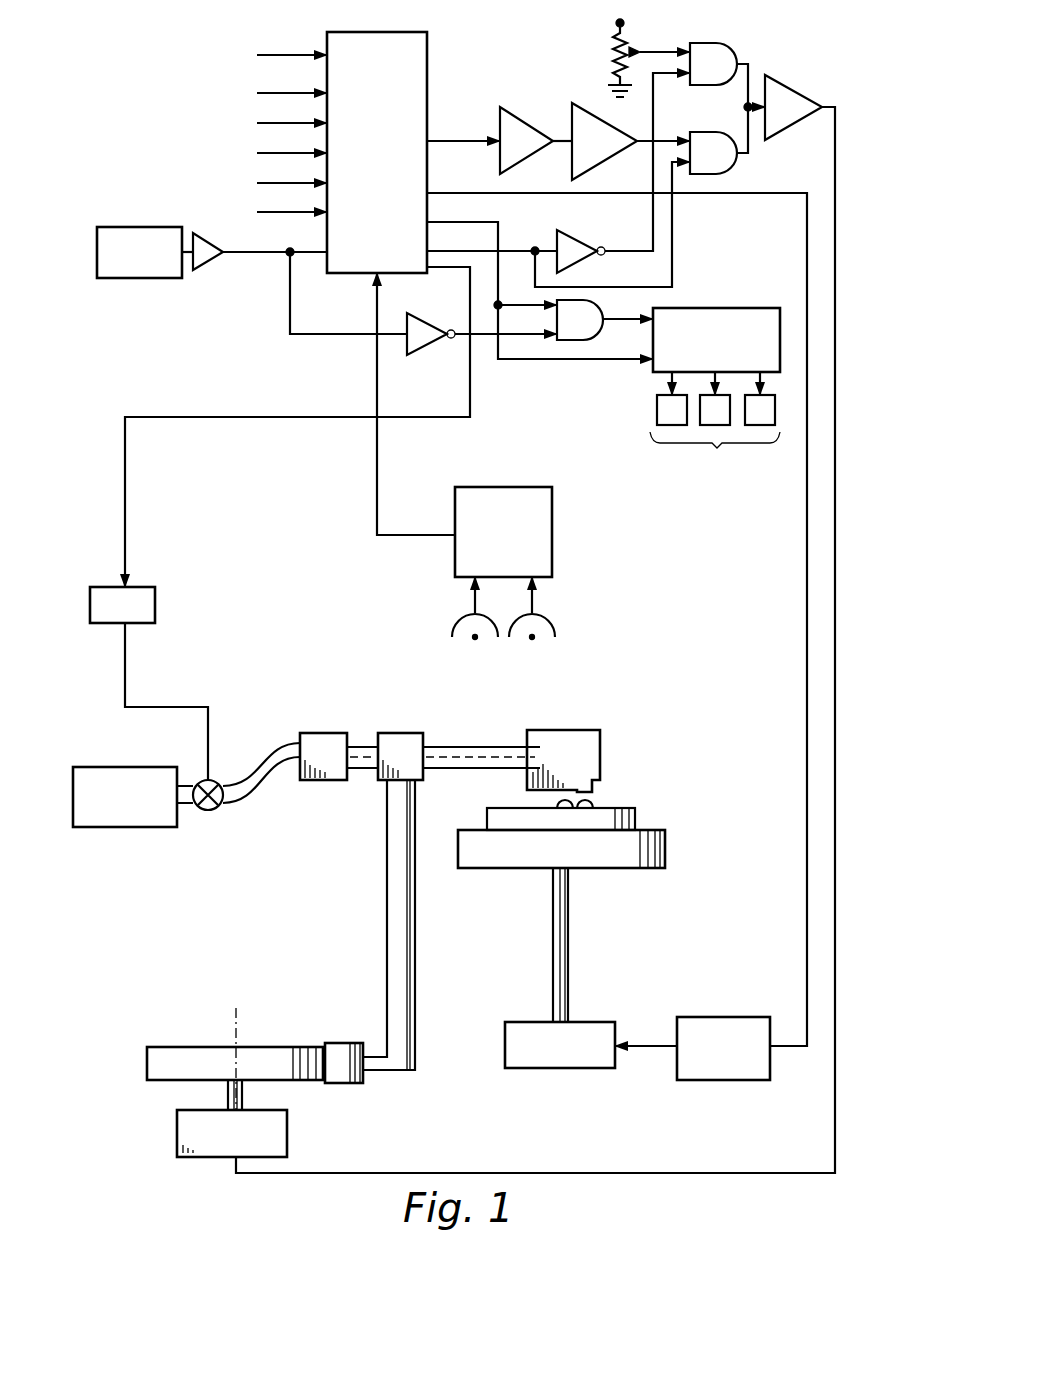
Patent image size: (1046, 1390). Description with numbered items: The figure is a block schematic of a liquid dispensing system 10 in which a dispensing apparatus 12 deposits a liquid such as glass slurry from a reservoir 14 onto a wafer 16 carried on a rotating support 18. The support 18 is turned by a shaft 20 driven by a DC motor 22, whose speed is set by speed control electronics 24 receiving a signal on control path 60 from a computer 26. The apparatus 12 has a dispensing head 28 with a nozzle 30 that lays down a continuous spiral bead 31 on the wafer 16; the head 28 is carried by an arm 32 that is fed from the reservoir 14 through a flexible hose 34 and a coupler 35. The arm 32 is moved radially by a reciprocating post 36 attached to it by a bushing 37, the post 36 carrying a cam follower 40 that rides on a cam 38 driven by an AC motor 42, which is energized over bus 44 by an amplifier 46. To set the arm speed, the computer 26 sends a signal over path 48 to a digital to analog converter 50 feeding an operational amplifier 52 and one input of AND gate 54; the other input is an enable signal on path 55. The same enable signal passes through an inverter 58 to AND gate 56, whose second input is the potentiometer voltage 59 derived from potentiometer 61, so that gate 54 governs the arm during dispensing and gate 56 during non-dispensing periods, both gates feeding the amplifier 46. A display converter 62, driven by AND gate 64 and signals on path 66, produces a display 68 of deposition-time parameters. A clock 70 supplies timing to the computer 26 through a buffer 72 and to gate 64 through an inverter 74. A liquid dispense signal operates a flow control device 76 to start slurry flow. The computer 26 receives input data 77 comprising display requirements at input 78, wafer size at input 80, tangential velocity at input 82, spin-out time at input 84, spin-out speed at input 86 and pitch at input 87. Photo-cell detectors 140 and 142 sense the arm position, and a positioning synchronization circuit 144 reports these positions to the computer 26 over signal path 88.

The liquid dispensing system 10 is at (808, 174).
The dispensing apparatus 12 is at (565, 710).
The reservoir 14 is at (119, 767).
The wafer 16 is at (487, 812).
The rotating support 18 is at (666, 855).
The shaft 20 is at (569, 916).
The DC motor 22 is at (605, 1020).
The speed control electronics 24 is at (700, 1016).
The computer 26 is at (427, 45).
The dispensing head 28 is at (602, 735).
The nozzle 30 is at (597, 787).
The spiral bead 31 is at (598, 803).
The arm 32 is at (451, 747).
The flexible hose 34 is at (249, 768).
The coupler 35 is at (325, 733).
The reciprocating post 36 is at (416, 921).
The bushing 37 is at (395, 733).
The cam 38 is at (175, 1047).
The cam follower 40 is at (340, 1084).
The AC motor 42 is at (177, 1135).
The bus 44 is at (572, 1172).
The amplifier 46 is at (790, 94).
The path 48 is at (432, 136).
The digital to analog converter 50 is at (538, 128).
The operational amplifier 52 is at (613, 128).
The AND gate 54 is at (734, 166).
The enable signal path 55 is at (528, 250).
The AND gate 56 is at (714, 85).
The inverter 58 is at (585, 243).
The potentiometer voltage 59 is at (657, 48).
The control path 60 is at (731, 198).
The potentiometer 61 is at (603, 62).
The display converter 62 is at (758, 308).
The AND gate 64 is at (600, 336).
The path 66 is at (558, 361).
The display 68 is at (783, 474).
The clock 70 is at (152, 278).
The buffer 72 is at (209, 266).
The inverter 74 is at (430, 350).
The flow control device 76 is at (155, 613).
The input data 77 is at (209, 37).
The display requirements input 78 is at (297, 58).
The wafer size input 80 is at (297, 96).
The tangential velocity input 82 is at (297, 126).
The spin-out time input 84 is at (297, 156).
The spin-out speed input 86 is at (297, 186).
The pitch input 87 is at (297, 215).
The signal path 88 is at (378, 366).
The photo-cell detector 140 is at (458, 617).
The photo-cell detector 142 is at (551, 617).
The positioning synchronization circuit 144 is at (504, 488).